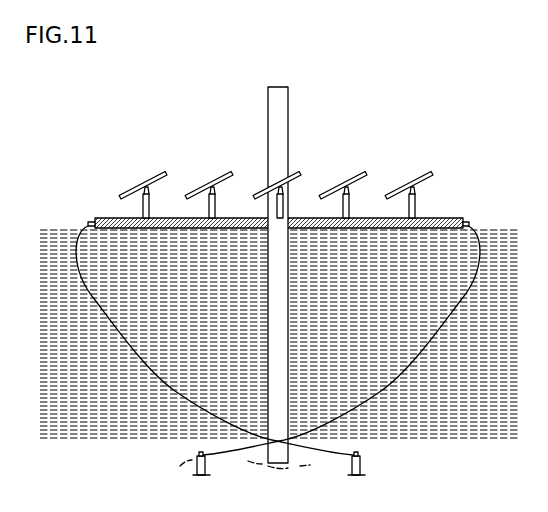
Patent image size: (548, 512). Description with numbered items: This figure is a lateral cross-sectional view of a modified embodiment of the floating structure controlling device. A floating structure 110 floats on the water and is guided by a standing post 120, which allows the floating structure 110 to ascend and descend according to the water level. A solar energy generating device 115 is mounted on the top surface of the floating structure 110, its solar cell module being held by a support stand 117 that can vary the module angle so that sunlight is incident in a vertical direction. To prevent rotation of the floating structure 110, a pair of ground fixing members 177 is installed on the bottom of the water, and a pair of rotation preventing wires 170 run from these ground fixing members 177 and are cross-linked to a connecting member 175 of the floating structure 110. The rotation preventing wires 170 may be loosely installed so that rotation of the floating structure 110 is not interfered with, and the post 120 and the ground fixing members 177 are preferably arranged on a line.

The floating structure 110 is at (96, 217).
The solar energy generating device 115 is at (411, 187).
The support stand 117 is at (350, 201).
The post 120 is at (289, 104).
The rotation preventing wire 170 is at (176, 391).
The connecting member 175 is at (467, 222).
The ground fixing member 177 is at (195, 464).